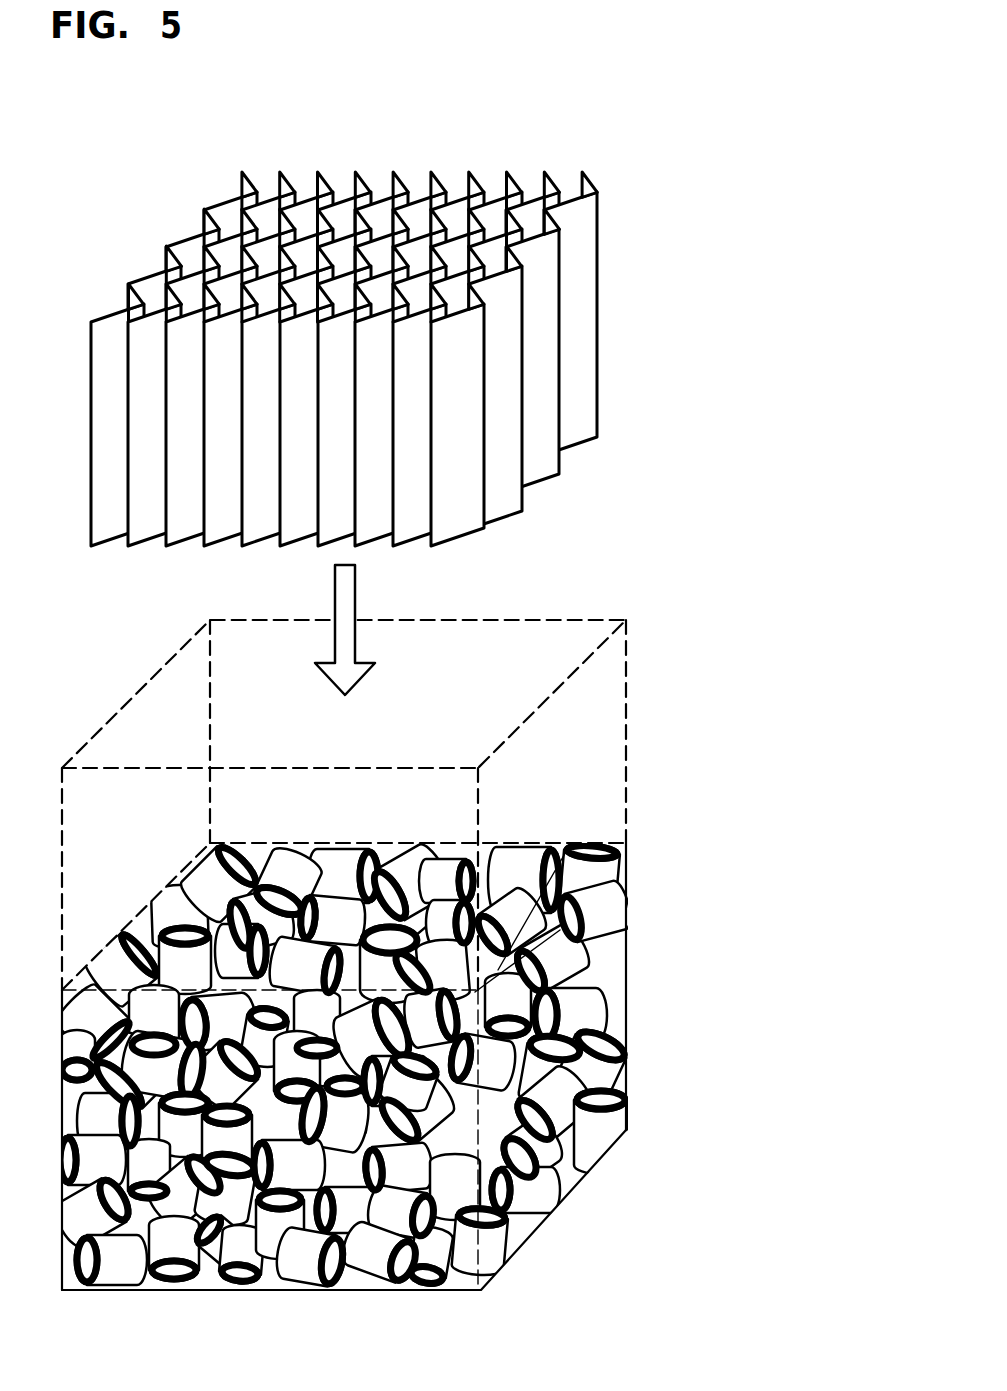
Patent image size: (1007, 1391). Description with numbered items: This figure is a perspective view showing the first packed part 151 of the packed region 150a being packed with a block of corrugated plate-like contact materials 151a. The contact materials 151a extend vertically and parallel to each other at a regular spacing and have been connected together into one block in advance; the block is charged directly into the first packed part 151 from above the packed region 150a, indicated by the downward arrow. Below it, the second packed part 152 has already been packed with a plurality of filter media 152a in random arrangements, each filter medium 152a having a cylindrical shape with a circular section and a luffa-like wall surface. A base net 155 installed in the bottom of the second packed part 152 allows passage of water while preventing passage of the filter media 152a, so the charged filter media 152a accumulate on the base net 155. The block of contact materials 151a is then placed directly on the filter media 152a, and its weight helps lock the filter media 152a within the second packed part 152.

The corrugated plate-like contact materials 151a is at (570, 239).
The packed region 150a is at (613, 592).
The first packed part 151 is at (627, 757).
The filter media 152a is at (593, 923).
The second packed part 152 is at (427, 1064).
The base net 155 is at (544, 1239).